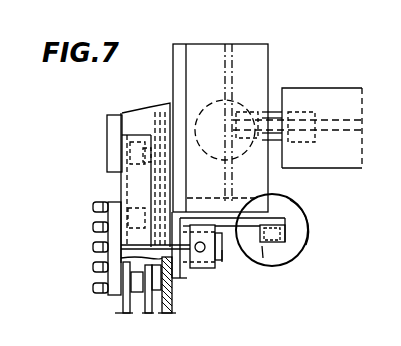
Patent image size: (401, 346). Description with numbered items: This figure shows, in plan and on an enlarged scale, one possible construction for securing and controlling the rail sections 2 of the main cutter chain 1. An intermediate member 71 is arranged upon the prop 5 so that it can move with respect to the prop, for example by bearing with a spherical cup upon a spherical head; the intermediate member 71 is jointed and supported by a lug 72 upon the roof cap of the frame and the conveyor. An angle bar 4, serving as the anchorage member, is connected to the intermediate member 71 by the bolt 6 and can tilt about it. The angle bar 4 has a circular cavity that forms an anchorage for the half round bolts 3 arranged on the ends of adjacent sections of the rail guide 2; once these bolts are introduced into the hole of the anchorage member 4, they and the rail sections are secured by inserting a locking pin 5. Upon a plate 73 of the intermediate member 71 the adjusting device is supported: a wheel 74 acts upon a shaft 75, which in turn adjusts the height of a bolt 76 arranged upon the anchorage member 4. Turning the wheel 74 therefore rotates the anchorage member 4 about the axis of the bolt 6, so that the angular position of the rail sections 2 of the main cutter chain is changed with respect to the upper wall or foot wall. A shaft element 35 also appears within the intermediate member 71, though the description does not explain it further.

The main cutter chain 1 is at (127, 313).
The rail sections 2 is at (167, 313).
The half round bolts 3 is at (243, 248).
The angle bar 4 is at (183, 270).
The prop 5 is at (199, 254).
The bolt 6 is at (240, 213).
The shaft 35 is at (238, 103).
The intermediate member 71 is at (178, 74).
The lug 72 is at (270, 112).
The plate 73 is at (263, 258).
The wheel 74 is at (306, 232).
The shaft 75 is at (283, 248).
The bolt 76 is at (278, 216).